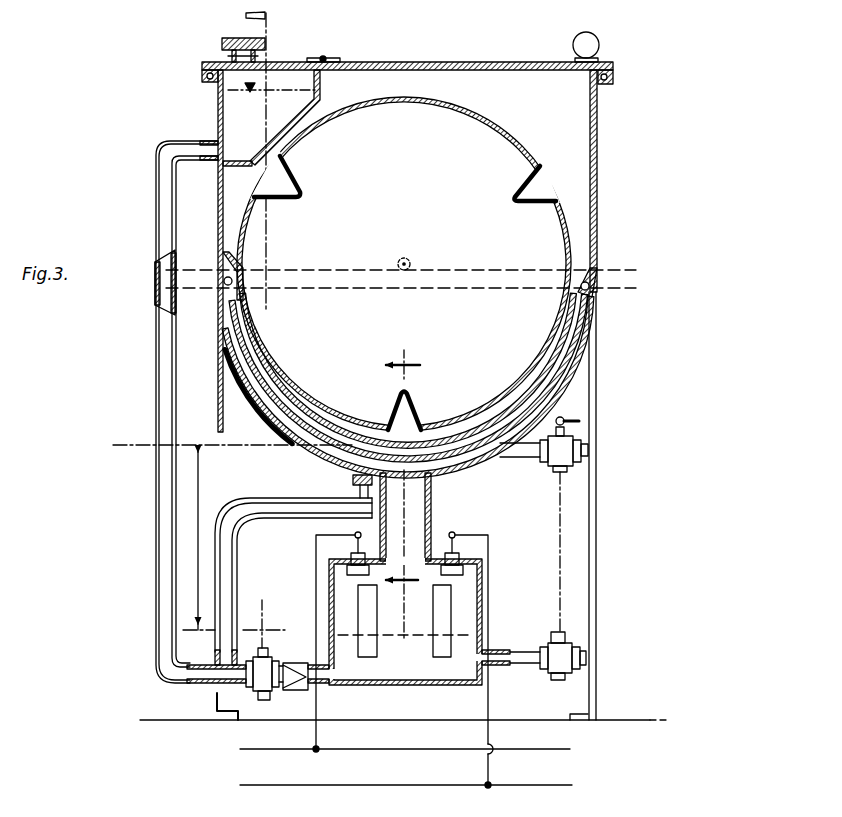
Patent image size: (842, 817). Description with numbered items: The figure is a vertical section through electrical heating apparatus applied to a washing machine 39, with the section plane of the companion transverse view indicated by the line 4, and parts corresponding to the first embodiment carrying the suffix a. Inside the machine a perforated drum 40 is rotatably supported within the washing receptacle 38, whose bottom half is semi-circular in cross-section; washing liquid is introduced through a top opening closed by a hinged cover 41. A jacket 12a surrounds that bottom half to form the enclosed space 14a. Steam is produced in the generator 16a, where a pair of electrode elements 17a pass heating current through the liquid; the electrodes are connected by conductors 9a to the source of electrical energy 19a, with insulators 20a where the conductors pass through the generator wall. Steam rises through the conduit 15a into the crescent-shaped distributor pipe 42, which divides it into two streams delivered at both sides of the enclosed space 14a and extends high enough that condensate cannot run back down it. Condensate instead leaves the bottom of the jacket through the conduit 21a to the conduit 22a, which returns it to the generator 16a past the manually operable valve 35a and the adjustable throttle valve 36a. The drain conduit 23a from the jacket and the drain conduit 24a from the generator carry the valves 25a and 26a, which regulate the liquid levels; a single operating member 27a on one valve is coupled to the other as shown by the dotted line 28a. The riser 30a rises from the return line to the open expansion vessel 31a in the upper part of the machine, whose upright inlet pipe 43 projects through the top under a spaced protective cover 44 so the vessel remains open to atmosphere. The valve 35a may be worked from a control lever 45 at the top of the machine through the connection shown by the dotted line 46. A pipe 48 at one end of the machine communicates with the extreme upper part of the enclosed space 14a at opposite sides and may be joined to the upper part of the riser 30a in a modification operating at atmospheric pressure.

The section line 4 is at (403, 488).
The conductors 9a is at (327, 588).
The jacket 12a is at (590, 368).
The enclosed space 14a is at (584, 330).
The conduit 15a is at (432, 512).
The generator 16a is at (400, 688).
The electrode elements 17a is at (433, 617).
The source of electrical energy 19a is at (263, 751).
The insulators 20a is at (349, 553).
The conduit 21a is at (284, 512).
The conduit 22a is at (200, 683).
The drain conduit 23a is at (537, 460).
The drain conduit 24a is at (527, 666).
The valve 25a is at (582, 462).
The valve 26a is at (582, 653).
The operating member 27a is at (582, 420).
The dotted line 28a is at (564, 562).
The riser 30a is at (165, 500).
The expansion vessel 31a is at (218, 98).
The valve 35a is at (266, 698).
The throttle valve 36a is at (296, 663).
The washing receptacle 38 is at (598, 186).
The washing machine 39 is at (616, 76).
The perforated drum 40 is at (528, 142).
The hinged cover 41 is at (518, 62).
The distributor pipe 42 is at (297, 434).
The inlet pipe 43 is at (228, 58).
The protective cover 44 is at (226, 40).
The control lever 45 is at (266, 15).
The dotted line 46 is at (270, 232).
The pipe 48 is at (172, 268).
The suffix a is at (204, 545).